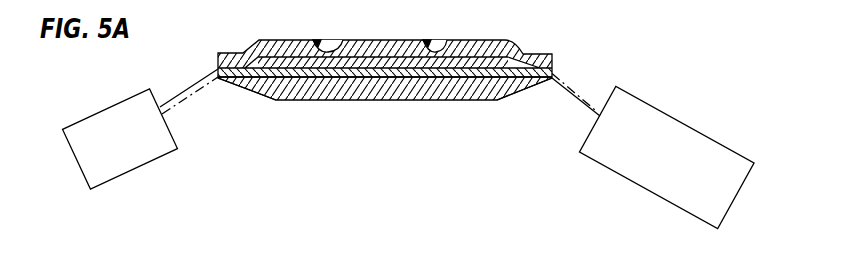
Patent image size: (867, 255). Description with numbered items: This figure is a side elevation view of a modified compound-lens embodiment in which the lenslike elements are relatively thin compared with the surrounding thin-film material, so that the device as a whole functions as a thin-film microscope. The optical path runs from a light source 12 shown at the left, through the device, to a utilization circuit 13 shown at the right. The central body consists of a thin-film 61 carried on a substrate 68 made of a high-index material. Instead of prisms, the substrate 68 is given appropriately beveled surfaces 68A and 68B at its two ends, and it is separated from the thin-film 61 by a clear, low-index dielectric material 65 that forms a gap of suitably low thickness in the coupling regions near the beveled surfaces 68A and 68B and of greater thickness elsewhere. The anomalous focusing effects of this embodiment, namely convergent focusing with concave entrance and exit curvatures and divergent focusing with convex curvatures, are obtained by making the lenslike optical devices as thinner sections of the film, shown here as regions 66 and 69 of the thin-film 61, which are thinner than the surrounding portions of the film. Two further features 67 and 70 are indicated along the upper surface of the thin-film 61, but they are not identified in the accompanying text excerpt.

The light source 12 is at (105, 104).
The utilization circuit 13 is at (682, 122).
The thin-film 61 is at (288, 40).
The clear low-index dielectric material 65 is at (218, 72).
The thinner region of thin-film 66 is at (329, 75).
The index-matching bead 67 is at (341, 43).
The substrate 68 is at (393, 100).
The beveled surface of substrate 68A is at (264, 95).
The beveled surface of substrate 68B is at (514, 93).
The thinner region of thin-film 69 is at (440, 80).
The second index-matching bead 70 is at (427, 43).